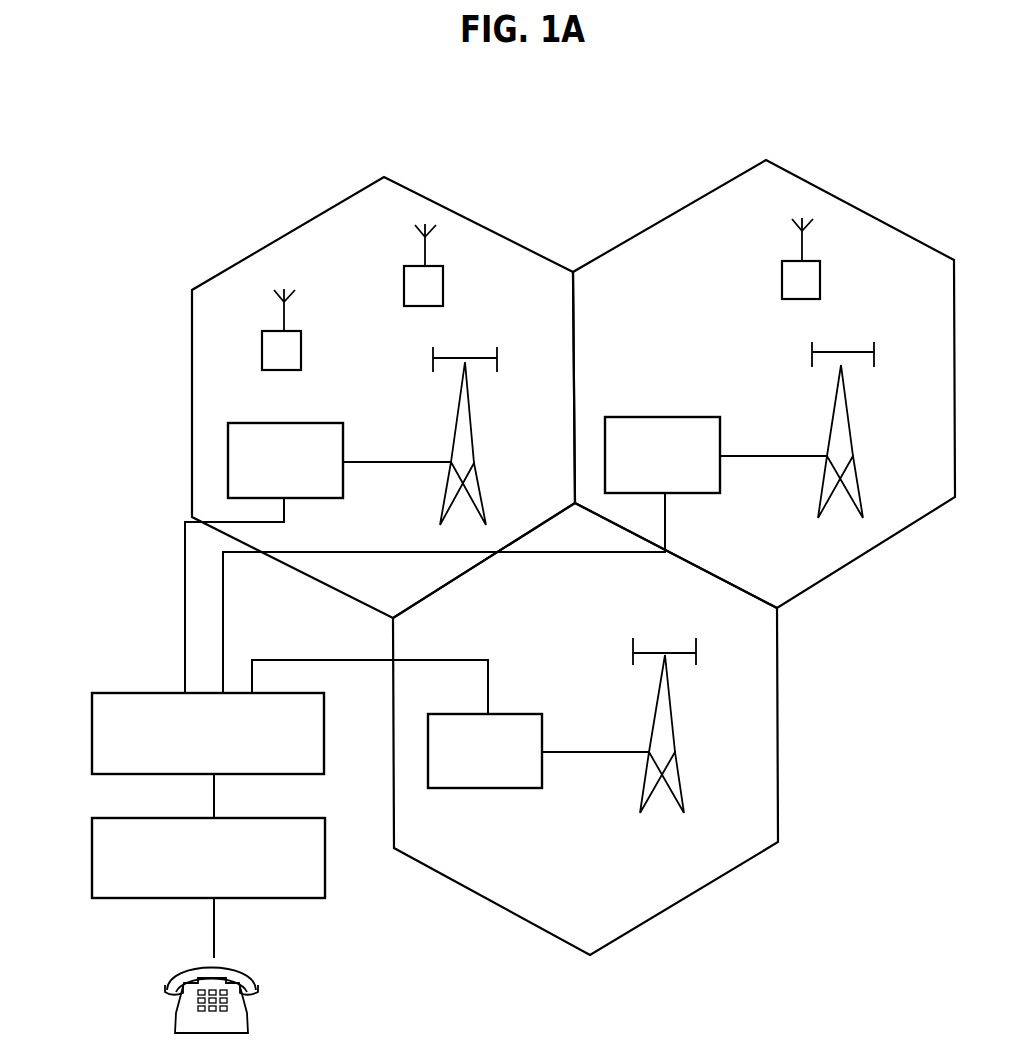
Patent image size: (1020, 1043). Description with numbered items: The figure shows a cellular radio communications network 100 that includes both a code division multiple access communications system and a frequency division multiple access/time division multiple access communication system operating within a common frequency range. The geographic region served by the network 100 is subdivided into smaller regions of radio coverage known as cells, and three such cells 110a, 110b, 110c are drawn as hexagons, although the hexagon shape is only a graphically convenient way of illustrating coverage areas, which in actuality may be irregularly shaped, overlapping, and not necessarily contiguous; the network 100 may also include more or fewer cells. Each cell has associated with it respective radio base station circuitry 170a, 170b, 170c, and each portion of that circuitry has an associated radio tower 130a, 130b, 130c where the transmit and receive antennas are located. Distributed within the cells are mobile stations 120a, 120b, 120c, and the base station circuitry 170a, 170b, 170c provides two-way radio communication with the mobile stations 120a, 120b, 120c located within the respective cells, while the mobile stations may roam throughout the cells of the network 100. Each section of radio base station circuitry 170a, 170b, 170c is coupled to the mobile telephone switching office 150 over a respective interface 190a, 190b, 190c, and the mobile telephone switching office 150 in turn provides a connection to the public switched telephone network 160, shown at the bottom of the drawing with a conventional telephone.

The cellular radio communications network 100 is at (247, 148).
The cell 110a is at (297, 229).
The cell 110b is at (676, 214).
The cell 110c is at (779, 735).
The mobile station 120a is at (301, 350).
The mobile station 120b is at (404, 267).
The mobile station 120c is at (782, 261).
The radio tower 130a is at (477, 437).
The radio tower 130b is at (853, 430).
The radio tower 130c is at (675, 728).
The mobile telephone switching office 150 is at (105, 692).
The public switched telephone network 160 is at (110, 818).
The radio base station circuitry 170a is at (278, 422).
The radio base station circuitry 170b is at (658, 416).
The radio base station circuitry 170c is at (532, 713).
The interface 190a is at (183, 550).
The interface 190b is at (667, 517).
The interface 190c is at (465, 657).